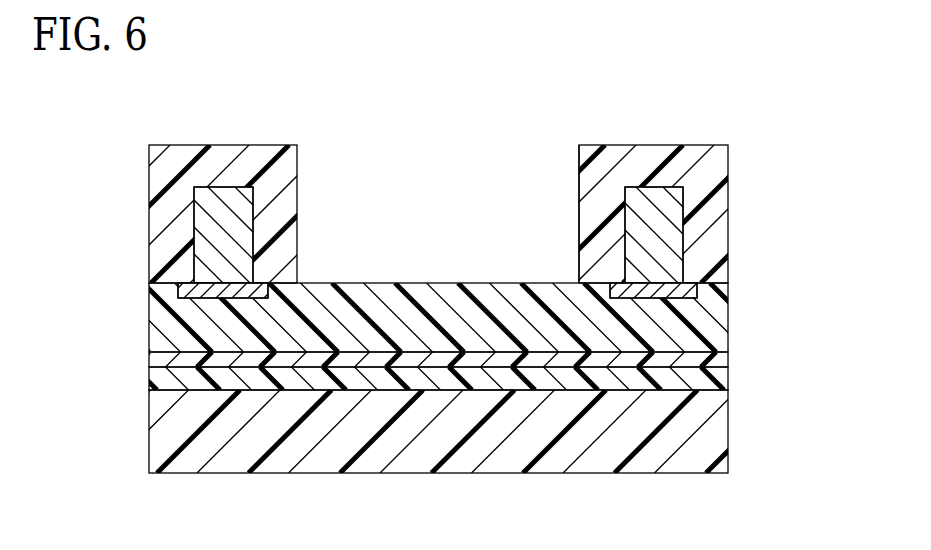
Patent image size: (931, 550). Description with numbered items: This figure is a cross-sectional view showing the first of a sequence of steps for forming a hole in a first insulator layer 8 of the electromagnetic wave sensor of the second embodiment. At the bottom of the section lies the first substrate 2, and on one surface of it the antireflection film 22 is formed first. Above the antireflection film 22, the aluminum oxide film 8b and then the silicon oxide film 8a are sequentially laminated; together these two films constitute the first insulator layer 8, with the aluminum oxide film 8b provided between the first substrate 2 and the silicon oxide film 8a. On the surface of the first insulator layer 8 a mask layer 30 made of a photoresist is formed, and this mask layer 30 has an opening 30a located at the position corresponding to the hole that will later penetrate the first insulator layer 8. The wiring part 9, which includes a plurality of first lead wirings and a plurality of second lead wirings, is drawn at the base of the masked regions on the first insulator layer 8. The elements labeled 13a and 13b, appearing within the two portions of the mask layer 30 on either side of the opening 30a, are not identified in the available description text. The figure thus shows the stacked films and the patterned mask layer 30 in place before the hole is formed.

The first substrate 2 is at (717, 430).
The antireflection film 22 is at (717, 377).
The first insulator layer 8 is at (456, 325).
The silicon oxide film 8a is at (717, 315).
The aluminum oxide film 8b is at (450, 347).
The wiring part 9 is at (188, 296).
The first electrode 13a is at (224, 213).
The second electrode 13b is at (656, 212).
The mask layer 30 is at (717, 215).
The opening 30a is at (579, 203).